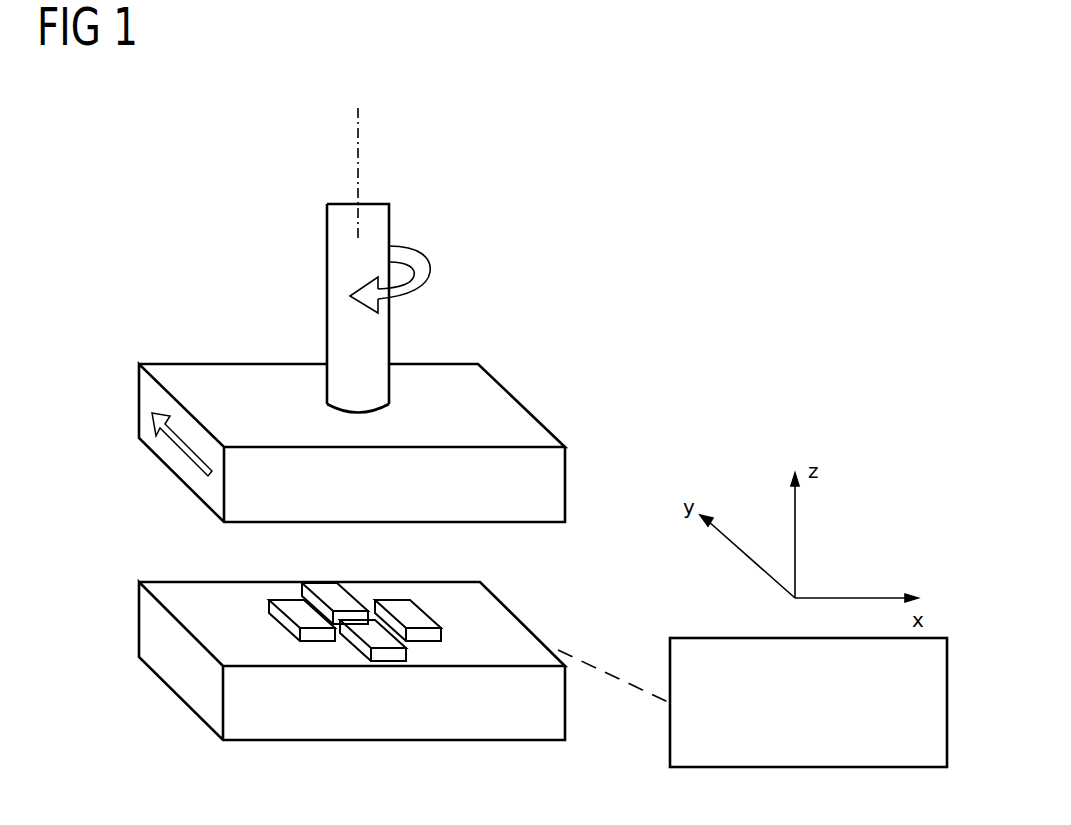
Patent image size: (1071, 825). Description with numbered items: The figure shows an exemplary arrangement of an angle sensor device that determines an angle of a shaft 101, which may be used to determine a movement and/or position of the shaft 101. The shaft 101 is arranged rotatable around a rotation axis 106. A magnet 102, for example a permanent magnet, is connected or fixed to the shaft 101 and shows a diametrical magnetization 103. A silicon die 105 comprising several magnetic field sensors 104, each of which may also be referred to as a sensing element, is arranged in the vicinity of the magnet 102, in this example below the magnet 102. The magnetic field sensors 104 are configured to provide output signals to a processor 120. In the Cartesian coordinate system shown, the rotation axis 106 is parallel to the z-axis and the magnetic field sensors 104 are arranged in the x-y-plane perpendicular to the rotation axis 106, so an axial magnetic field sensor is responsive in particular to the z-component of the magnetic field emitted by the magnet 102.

The shaft 101 is at (299, 221).
The magnet 102 is at (128, 378).
The diametrical magnetization 103 is at (180, 462).
The magnetic field sensors 104 is at (253, 630).
The silicon die 105 is at (185, 718).
The rotation axis 106 is at (360, 155).
The processor 120 is at (808, 702).